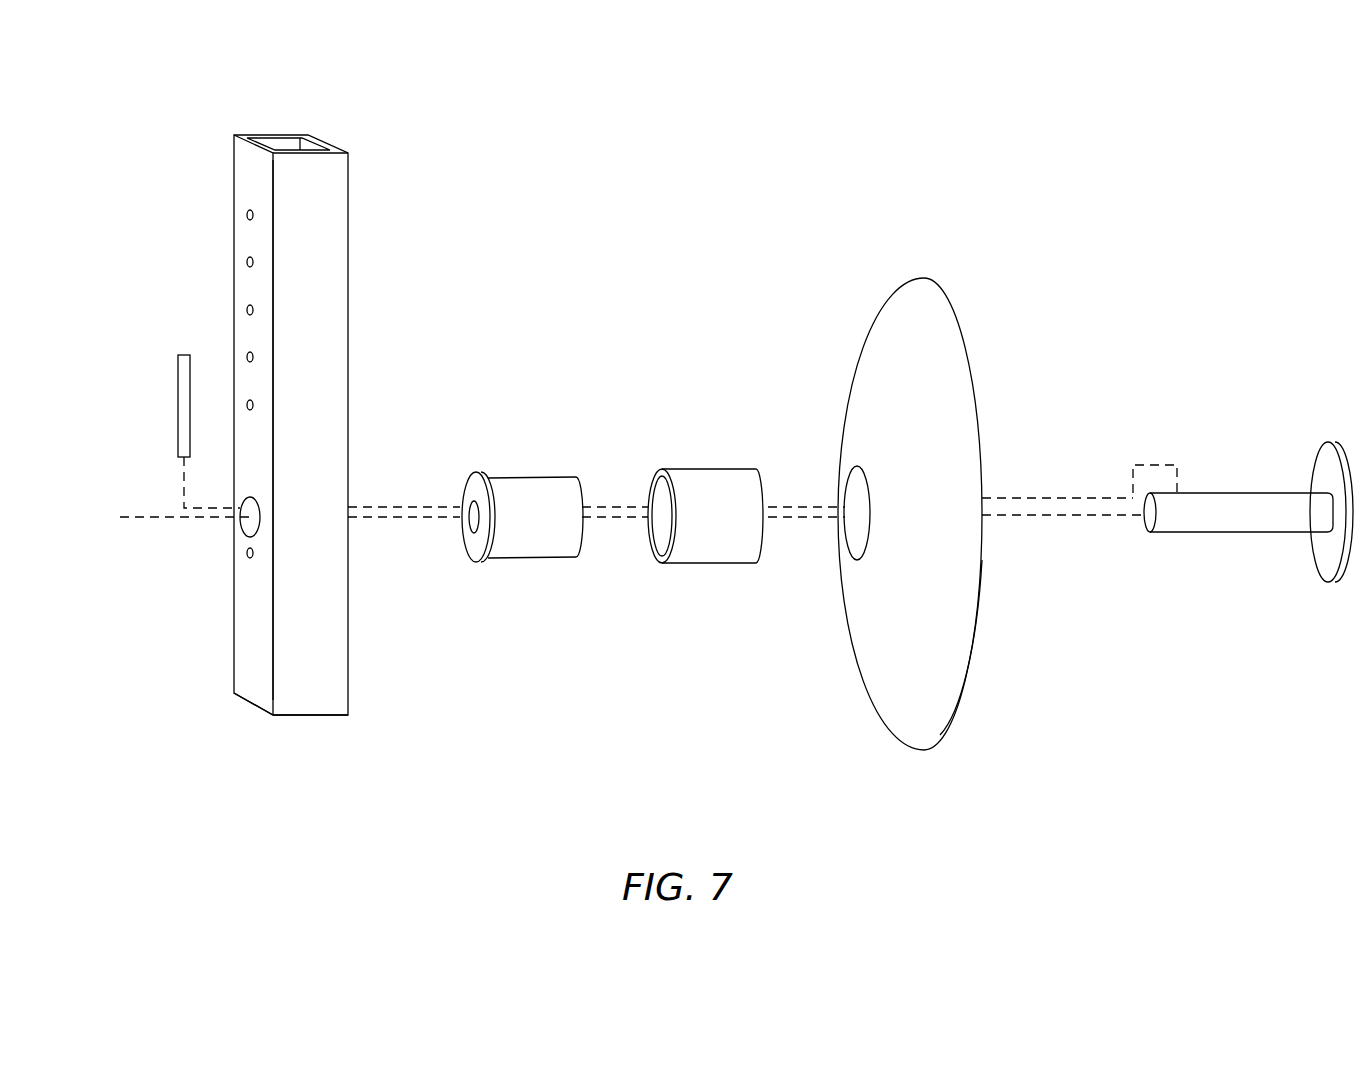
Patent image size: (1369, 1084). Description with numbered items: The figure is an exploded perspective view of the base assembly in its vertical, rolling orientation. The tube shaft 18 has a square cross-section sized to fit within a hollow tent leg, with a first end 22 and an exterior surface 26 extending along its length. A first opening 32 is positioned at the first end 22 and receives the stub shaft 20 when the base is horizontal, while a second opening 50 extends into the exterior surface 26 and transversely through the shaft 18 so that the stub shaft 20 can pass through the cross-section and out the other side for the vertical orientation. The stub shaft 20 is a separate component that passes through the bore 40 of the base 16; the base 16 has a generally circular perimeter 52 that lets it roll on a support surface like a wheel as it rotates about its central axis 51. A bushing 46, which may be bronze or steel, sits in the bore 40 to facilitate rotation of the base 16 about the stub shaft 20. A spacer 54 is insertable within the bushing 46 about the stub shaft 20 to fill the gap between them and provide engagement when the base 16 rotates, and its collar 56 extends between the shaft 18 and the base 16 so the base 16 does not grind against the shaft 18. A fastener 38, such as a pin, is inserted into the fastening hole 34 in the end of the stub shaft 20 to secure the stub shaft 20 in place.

The base 16 is at (930, 287).
The shaft 18 is at (338, 205).
The stub shaft 20 is at (1225, 500).
The first end 22 is at (345, 715).
The exterior surface 26 is at (313, 467).
The first opening 32 is at (285, 719).
The fastening hole 34 is at (1180, 497).
The fastener 38 is at (182, 395).
The bore 40 is at (853, 485).
The bushing 46 is at (688, 475).
The second opening 50 is at (247, 527).
The central axis 51 is at (118, 518).
The circular perimeter 52 is at (968, 668).
The spacer 54 is at (522, 478).
The collar 56 is at (475, 470).